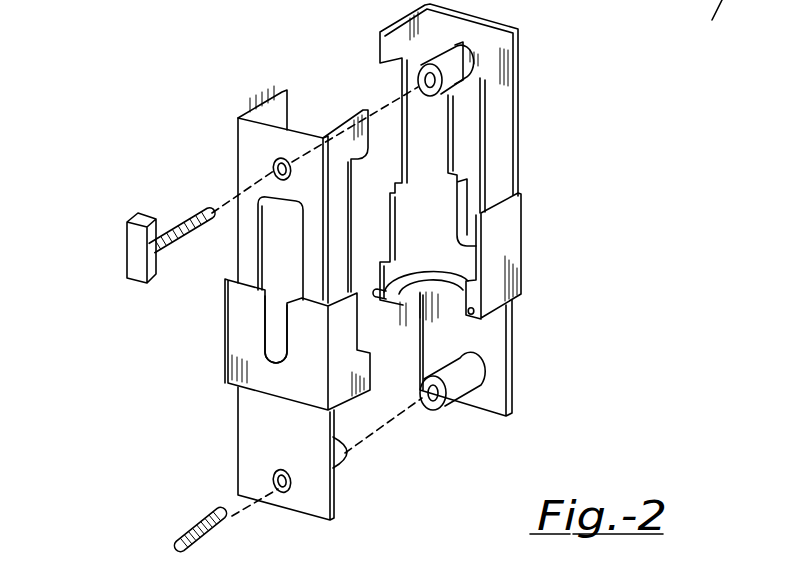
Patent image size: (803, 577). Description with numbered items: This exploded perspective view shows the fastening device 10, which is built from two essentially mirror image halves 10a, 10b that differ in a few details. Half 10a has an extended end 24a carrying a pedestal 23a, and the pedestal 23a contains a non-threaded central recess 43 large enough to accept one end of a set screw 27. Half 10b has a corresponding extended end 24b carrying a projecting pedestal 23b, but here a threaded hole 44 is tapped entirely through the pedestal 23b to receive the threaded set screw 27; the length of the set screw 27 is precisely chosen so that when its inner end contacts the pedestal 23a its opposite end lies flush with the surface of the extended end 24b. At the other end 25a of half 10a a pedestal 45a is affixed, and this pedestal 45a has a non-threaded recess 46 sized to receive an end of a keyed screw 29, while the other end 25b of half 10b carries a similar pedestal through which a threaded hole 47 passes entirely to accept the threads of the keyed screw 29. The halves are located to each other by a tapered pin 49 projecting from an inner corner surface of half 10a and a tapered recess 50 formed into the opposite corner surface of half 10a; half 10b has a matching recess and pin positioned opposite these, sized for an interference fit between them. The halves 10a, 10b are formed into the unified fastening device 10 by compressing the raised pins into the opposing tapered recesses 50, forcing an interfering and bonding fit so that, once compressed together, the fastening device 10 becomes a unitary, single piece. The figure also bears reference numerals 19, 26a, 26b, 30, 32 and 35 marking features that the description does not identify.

The fastening device 10 is at (385, 276).
The fastening device half 10a is at (452, 244).
The fastening device half 10b is at (268, 294).
The support member 19 is at (705, 23).
The pedestal 23a is at (460, 418).
The projecting pedestal 23b is at (337, 465).
The extended end 24a is at (512, 367).
The extended end 24b is at (237, 423).
The other end 25a is at (517, 92).
The other end 25b is at (233, 124).
The lower block of first half 26a is at (525, 240).
The lower block of second half 26b is at (222, 375).
The set screw 27 is at (173, 530).
The keyed screw 29 is at (162, 255).
The slot 30 is at (278, 228).
The bolt head 32 is at (152, 262).
The channel 35 is at (276, 322).
The non-threaded central recess 43 is at (430, 398).
The threaded hole 44 is at (274, 472).
The pedestal 45a is at (440, 54).
The non-threaded recess 46 is at (418, 82).
The threaded hole 47 is at (273, 168).
The tapered pin 49 is at (380, 297).
The tapered recess 50 is at (480, 322).